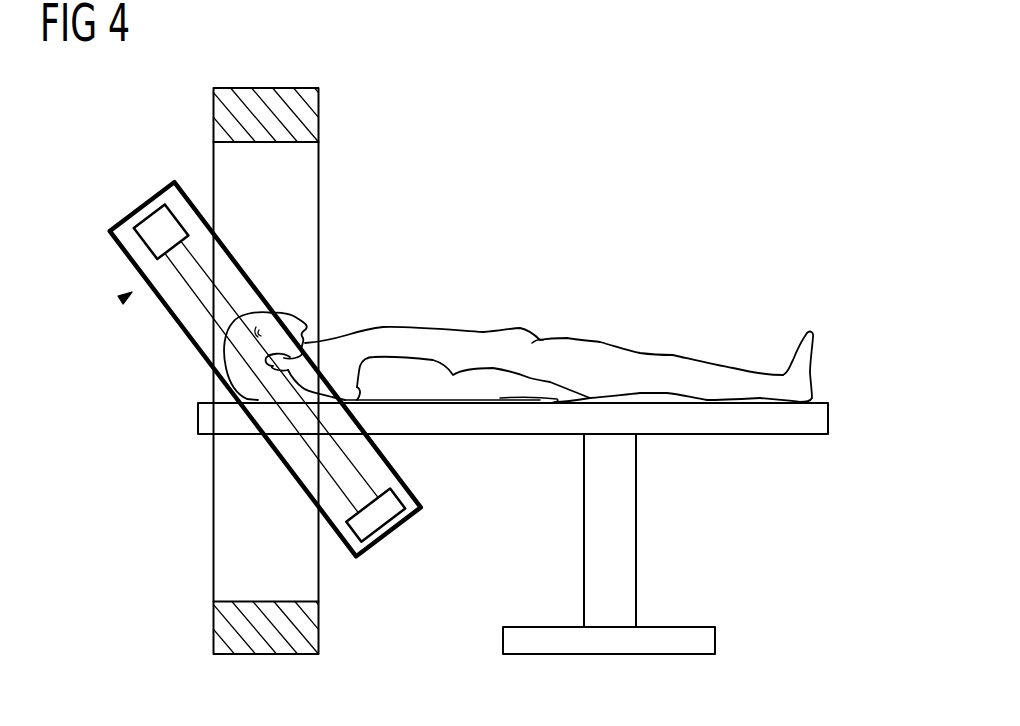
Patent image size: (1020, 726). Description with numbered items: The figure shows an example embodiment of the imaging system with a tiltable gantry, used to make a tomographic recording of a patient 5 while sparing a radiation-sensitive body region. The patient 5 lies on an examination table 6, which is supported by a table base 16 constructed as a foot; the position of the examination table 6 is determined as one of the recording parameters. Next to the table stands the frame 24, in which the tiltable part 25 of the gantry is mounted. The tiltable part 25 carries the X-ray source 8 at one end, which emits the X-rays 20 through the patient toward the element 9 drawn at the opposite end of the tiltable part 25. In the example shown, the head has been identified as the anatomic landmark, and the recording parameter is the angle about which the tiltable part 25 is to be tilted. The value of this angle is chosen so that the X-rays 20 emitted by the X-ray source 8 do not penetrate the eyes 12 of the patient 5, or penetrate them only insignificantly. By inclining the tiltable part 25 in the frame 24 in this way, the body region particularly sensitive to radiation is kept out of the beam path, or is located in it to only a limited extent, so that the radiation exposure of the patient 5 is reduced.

The patient 5 is at (518, 316).
The examination table 6 is at (817, 418).
The X-ray source 8 is at (157, 228).
The X-ray detector 9 is at (373, 518).
The eyes 12 is at (270, 312).
The table base 16 is at (625, 557).
The X-rays 20 is at (197, 322).
The frame 24 is at (320, 163).
The tiltable part 25 is at (128, 295).